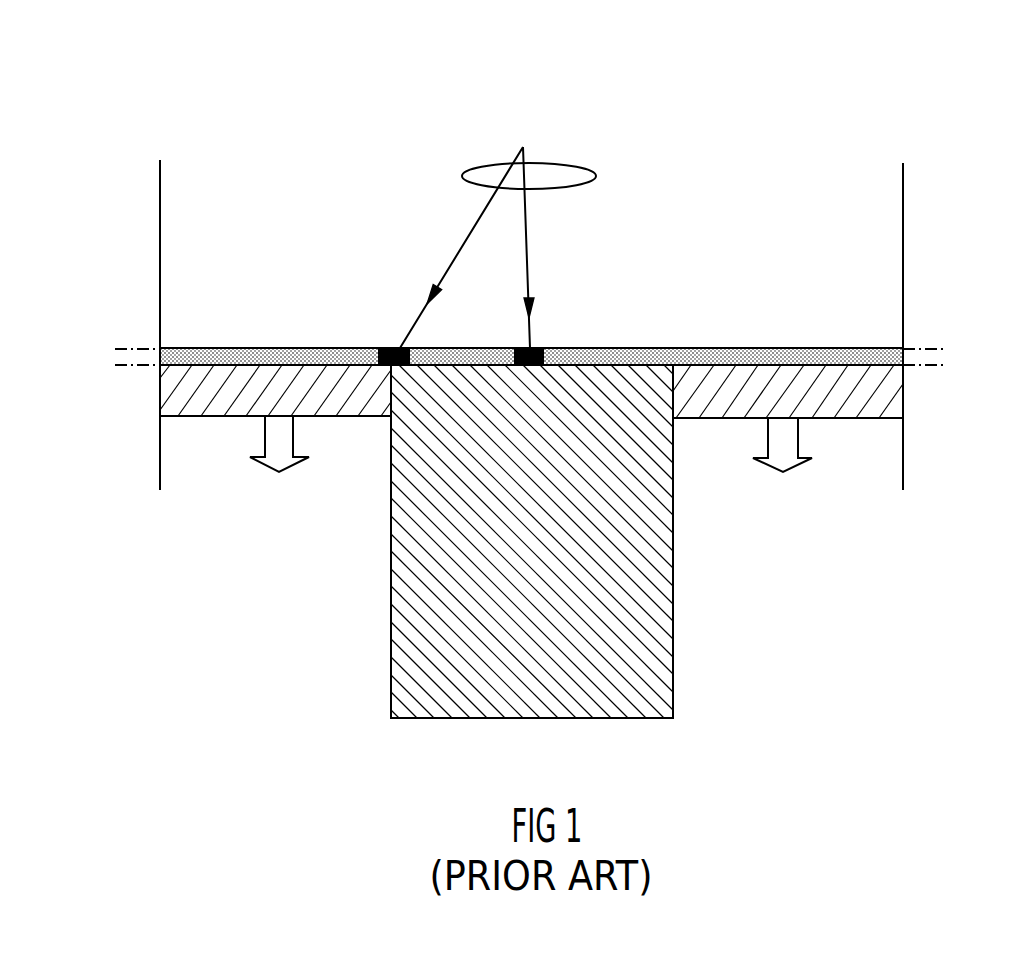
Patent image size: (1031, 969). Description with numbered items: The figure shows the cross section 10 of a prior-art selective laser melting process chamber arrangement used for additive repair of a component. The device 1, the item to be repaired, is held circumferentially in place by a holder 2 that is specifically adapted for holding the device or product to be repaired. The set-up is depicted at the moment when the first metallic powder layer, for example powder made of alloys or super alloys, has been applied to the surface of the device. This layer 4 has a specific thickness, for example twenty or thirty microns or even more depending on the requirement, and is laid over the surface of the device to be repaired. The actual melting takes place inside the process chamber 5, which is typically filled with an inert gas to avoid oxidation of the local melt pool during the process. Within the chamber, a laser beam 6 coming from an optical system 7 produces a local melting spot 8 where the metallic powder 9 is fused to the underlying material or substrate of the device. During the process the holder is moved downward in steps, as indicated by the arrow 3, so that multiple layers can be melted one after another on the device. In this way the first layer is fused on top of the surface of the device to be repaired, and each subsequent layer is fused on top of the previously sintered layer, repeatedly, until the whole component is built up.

The device 1 is at (545, 528).
The holder 2 is at (756, 385).
The arrow 3 is at (798, 462).
The layer 4 is at (962, 349).
The process chamber 5 is at (905, 185).
The laser beam 6 is at (531, 262).
The optical system 7 is at (550, 172).
The local melting spot 8 is at (388, 348).
The metallic powder 9 is at (675, 360).
The cross section 10 is at (224, 74).